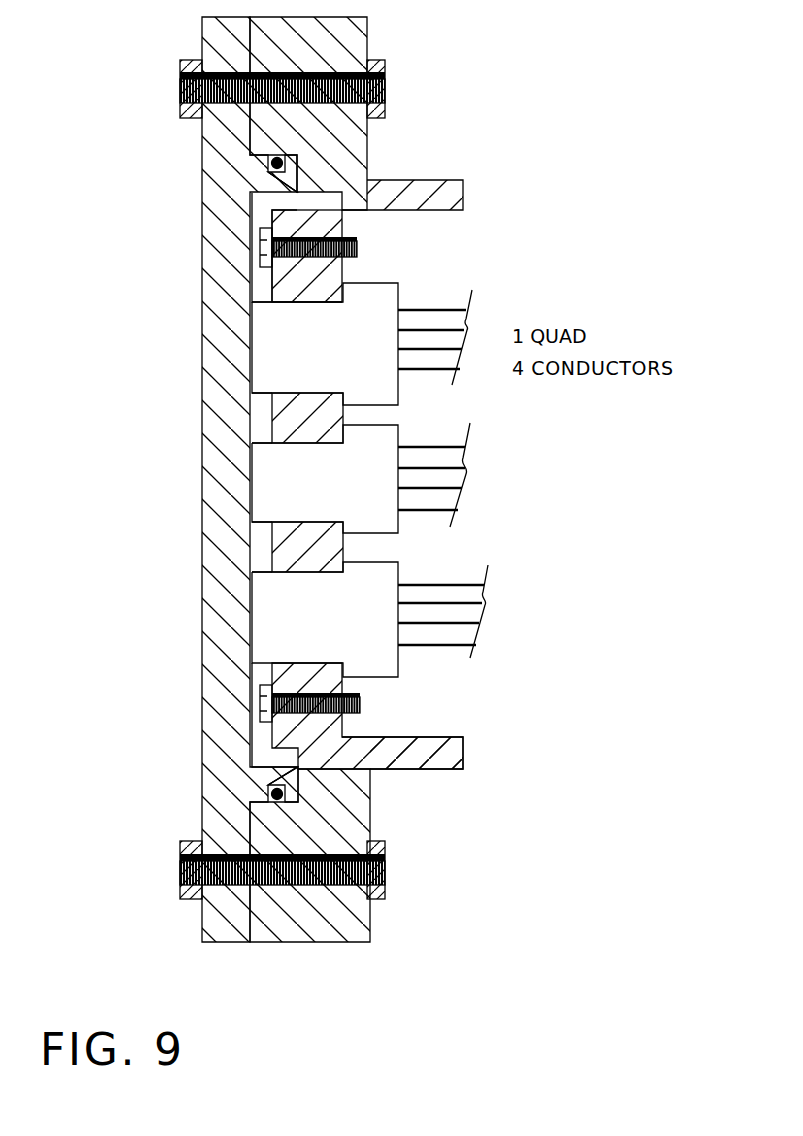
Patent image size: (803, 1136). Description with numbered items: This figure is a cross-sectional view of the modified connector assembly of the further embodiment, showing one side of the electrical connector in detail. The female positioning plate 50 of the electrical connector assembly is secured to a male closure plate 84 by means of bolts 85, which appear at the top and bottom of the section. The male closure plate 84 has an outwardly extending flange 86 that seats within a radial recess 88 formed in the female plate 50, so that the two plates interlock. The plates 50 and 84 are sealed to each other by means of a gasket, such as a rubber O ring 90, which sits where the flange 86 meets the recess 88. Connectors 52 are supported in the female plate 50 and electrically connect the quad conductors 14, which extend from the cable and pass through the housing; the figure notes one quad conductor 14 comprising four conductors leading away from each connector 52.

The quad conductors 14 is at (473, 314).
The female positioning plate 50 is at (331, 943).
The connectors 52 is at (398, 293).
The male closure plate 84 is at (202, 608).
The bolts 85 is at (180, 90).
The outwardly extending flange 86 is at (268, 178).
The radial recess 88 is at (297, 172).
The O ring 90 is at (283, 157).